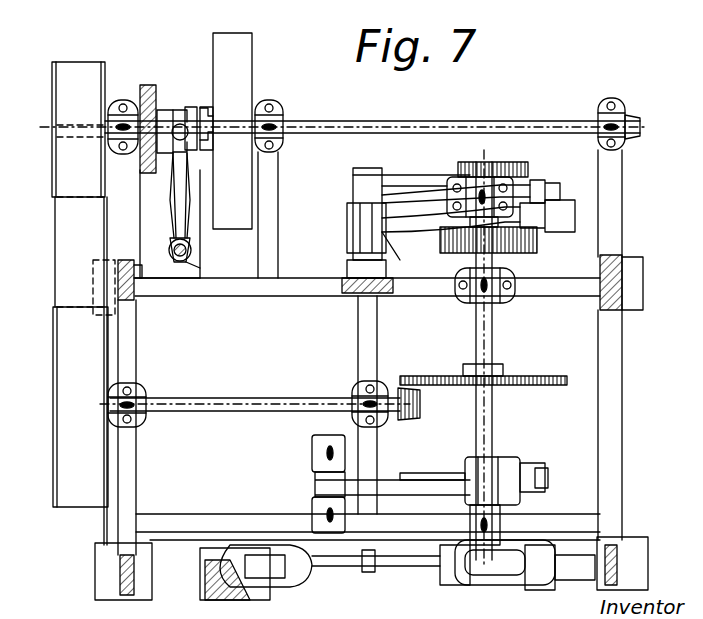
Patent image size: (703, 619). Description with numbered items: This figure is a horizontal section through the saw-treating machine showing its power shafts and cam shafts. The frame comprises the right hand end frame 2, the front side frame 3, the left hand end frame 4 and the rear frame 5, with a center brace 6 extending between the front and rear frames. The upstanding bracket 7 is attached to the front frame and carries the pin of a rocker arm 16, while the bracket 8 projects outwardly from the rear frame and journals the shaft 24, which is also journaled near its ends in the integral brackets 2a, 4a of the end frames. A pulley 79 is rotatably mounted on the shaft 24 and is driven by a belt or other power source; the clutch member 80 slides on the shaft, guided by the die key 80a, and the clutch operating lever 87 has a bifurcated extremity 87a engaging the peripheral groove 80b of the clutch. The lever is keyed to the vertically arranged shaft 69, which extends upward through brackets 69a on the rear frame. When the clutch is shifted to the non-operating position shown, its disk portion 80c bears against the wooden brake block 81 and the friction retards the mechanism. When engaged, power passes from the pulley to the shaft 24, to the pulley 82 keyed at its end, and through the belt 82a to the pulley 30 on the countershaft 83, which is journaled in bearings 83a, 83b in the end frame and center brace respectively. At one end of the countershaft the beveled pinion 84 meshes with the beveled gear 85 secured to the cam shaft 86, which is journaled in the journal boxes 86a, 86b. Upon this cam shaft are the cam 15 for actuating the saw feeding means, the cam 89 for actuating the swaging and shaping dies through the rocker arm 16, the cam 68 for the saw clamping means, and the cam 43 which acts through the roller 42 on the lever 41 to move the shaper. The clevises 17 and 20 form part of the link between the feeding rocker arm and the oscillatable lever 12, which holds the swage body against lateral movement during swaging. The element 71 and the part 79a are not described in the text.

The right hand end frame 2 is at (622, 380).
The integral bracket 2a is at (622, 190).
The front side frame 3 is at (211, 522).
The left hand end frame 4 is at (136, 486).
The integral bracket 4a is at (134, 236).
The rear frame 5 is at (255, 296).
The center brace 6 is at (358, 322).
The upstanding bracket 7 is at (312, 453).
The bracket 8 is at (278, 218).
The oscillatable lever 12 is at (200, 568).
The actuating cam 15 is at (497, 578).
The rocker arm 16 is at (315, 484).
The clevis 17 is at (447, 585).
The clevis 20 is at (292, 578).
The shaft 24 is at (370, 124).
The pulley 30 is at (52, 359).
The lever 41 is at (410, 177).
The roller 42 is at (484, 177).
The cam 43 is at (528, 168).
The cam 68 is at (438, 248).
The vertically arranged shaft 69 is at (198, 250).
The brackets 69a is at (200, 270).
The gear 71 is at (537, 240).
The pulley 79 is at (228, 33).
The plate lug 79a is at (213, 112).
The clutch member 80 is at (173, 110).
The die key 80a is at (184, 107).
The peripheral groove 80b is at (204, 106).
The disk portion 80c is at (165, 108).
The wooden brake block 81 is at (142, 90).
The pulley 82 is at (53, 89).
The belt 82a is at (62, 241).
The countershaft 83 is at (212, 402).
The bearing 83a is at (144, 394).
The bearing 83b is at (354, 394).
The beveled pinion 84 is at (418, 420).
The beveled gear 85 is at (435, 376).
The cam shaft 86 is at (492, 418).
The journal box 86a is at (505, 520).
The journal box 86b is at (500, 303).
The clutch operating lever 87 is at (176, 213).
The bifurcated extremity 87a is at (190, 150).
The cam 89 is at (445, 466).